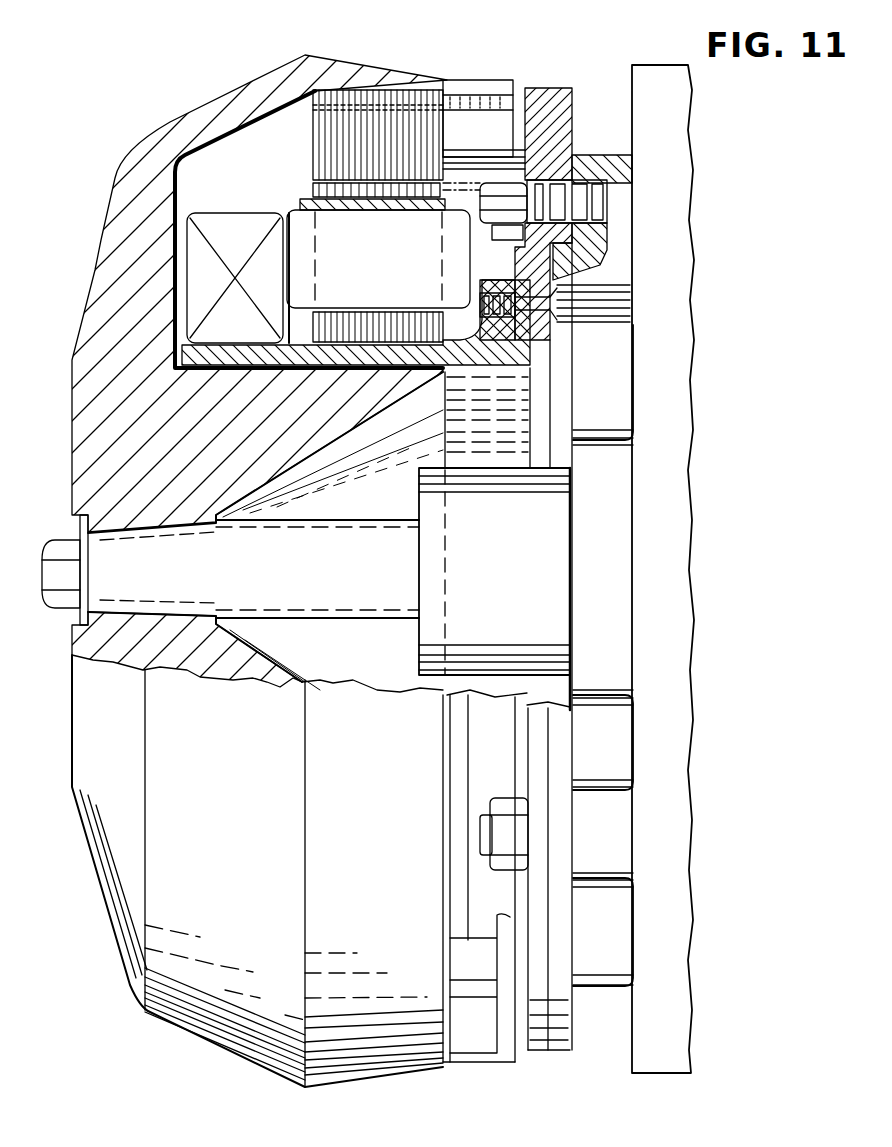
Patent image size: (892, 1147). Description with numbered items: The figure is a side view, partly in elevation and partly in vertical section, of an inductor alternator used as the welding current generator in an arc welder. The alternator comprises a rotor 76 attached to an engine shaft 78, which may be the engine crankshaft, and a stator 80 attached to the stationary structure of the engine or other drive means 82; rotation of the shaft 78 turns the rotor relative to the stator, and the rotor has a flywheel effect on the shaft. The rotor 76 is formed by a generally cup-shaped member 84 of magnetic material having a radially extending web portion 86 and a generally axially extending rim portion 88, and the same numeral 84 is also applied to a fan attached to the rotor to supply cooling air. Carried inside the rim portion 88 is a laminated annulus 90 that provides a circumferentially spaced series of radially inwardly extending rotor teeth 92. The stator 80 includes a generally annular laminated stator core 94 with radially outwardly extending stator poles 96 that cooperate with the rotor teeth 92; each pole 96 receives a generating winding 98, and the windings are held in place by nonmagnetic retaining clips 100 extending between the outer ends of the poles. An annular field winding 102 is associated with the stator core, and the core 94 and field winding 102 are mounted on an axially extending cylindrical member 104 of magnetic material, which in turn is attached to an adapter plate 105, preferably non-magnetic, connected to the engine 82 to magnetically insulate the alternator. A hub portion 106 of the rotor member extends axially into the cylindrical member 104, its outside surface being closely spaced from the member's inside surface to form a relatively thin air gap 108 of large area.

The rotor 76 is at (228, 92).
The engine shaft 78 is at (103, 562).
The stator 80 is at (292, 188).
The drive means 82 is at (672, 282).
The cup-shaped member 84 is at (478, 1052).
The web portion 86 is at (140, 184).
The rim portion 88 is at (333, 66).
The laminated annulus 90 is at (400, 90).
The rotor teeth 92 is at (313, 134).
The stator core 94 is at (313, 325).
The stator poles 96 is at (313, 193).
The generating winding 98 is at (384, 283).
The retaining clips 100 is at (330, 208).
The field winding 102 is at (237, 235).
The cylindrical member 104 is at (205, 352).
The adapter plate 105 is at (538, 108).
The hub portion 106 is at (122, 404).
The air gap 108 is at (332, 378).